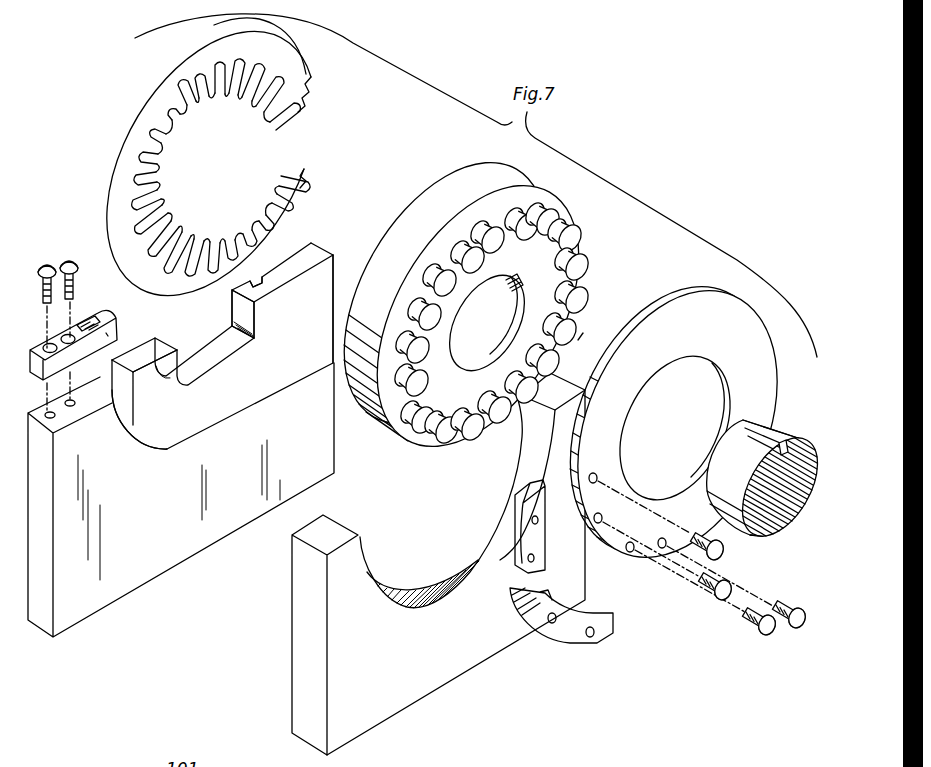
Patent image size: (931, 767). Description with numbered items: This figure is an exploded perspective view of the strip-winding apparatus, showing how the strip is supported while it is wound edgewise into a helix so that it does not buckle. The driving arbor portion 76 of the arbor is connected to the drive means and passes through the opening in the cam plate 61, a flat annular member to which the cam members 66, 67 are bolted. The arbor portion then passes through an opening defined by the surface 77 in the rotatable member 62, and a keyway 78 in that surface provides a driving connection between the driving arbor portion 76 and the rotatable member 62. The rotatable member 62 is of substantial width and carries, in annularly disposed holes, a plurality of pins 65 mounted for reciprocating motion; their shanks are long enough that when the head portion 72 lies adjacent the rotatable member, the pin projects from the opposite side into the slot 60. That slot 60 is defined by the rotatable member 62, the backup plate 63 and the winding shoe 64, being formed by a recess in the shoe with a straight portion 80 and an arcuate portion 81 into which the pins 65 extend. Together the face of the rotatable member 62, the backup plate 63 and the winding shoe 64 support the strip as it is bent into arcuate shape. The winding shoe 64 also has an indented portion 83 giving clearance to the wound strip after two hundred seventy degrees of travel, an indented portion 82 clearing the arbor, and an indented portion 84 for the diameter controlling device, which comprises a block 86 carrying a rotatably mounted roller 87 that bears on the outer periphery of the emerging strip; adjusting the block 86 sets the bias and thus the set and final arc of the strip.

The slot 60 is at (333, 318).
The cam plate 61 is at (678, 325).
The rotatable member 62 is at (468, 304).
The backup plate 63 is at (295, 636).
The winding shoe 64 is at (122, 565).
The pins 65 is at (583, 333).
The cam member 66 is at (600, 611).
The cam member 67 is at (515, 527).
The head portion 72 is at (589, 268).
The driving arbor portion 76 is at (798, 440).
The surface 77 is at (473, 357).
The keyway 78 is at (507, 273).
The straight portion 80 is at (222, 366).
The arcuate portion 81 is at (172, 420).
The indented portion 82 is at (232, 300).
The indented portion 83 is at (273, 280).
The indented portion 84 is at (120, 385).
The block 86 is at (32, 350).
The roller 87 is at (108, 327).